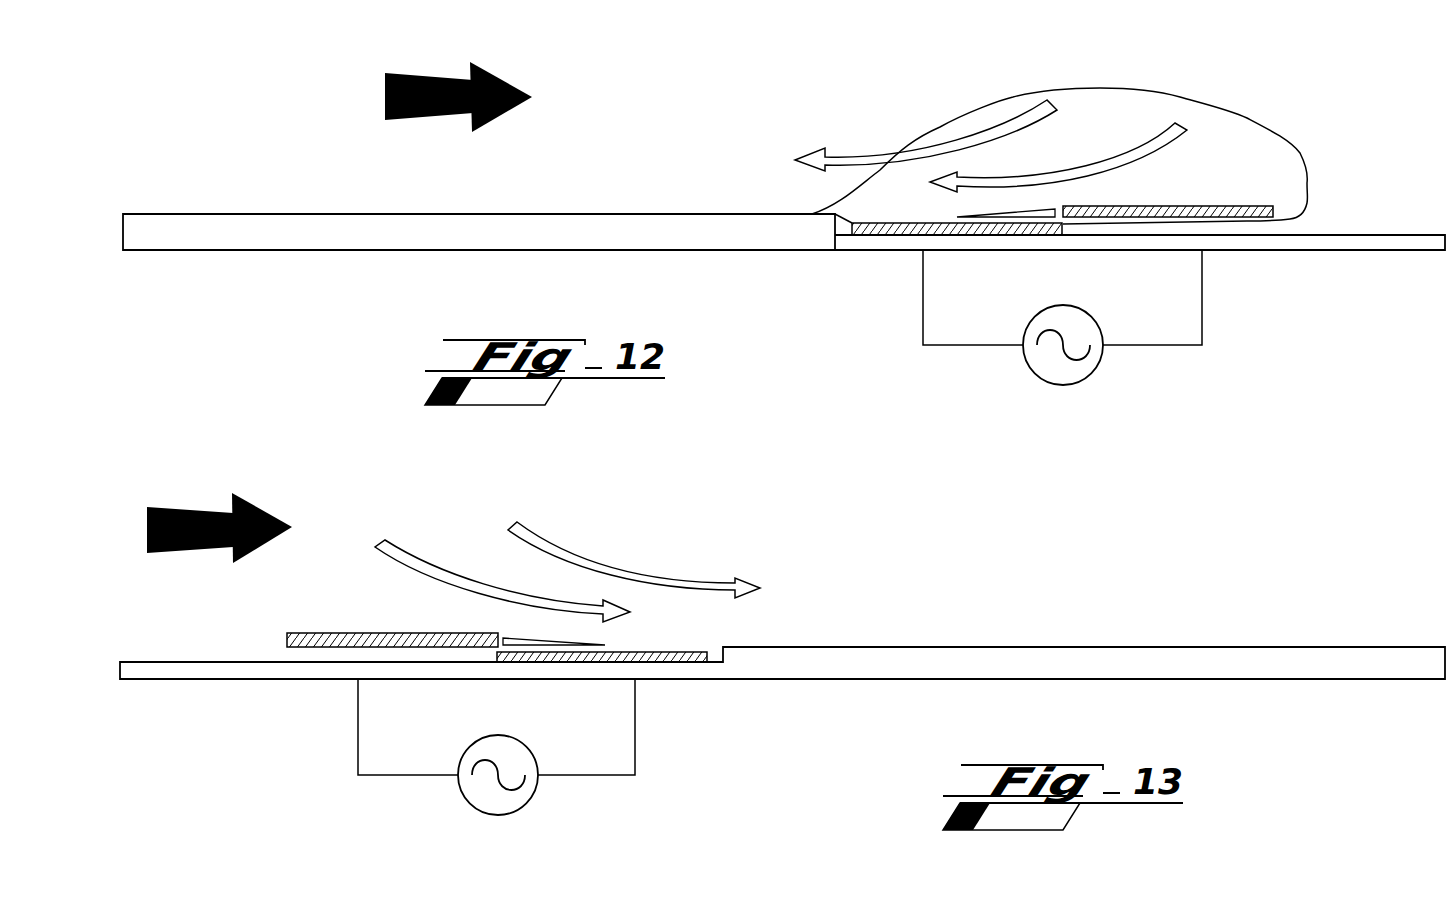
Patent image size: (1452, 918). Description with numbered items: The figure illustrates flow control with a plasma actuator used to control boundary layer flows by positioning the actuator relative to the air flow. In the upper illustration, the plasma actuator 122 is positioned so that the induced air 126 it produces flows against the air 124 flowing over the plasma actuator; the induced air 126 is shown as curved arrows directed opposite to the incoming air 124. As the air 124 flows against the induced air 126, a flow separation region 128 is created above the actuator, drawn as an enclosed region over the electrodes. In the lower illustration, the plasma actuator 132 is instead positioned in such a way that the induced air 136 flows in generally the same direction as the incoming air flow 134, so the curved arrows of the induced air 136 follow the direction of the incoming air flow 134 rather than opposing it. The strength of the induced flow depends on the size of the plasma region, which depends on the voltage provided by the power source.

In FIG. 12, the plasma actuator 122 is at (1198, 206).
In FIG. 12, the air 124 is at (430, 77).
In FIG. 12, the induced air 126 is at (988, 140).
In FIG. 12, the flow separation region 128 is at (1128, 89).
In FIG. 13, the plasma actuator 132 is at (315, 648).
In FIG. 13, the incoming air flow 134 is at (187, 513).
In FIG. 13, the induced air 136 is at (587, 563).